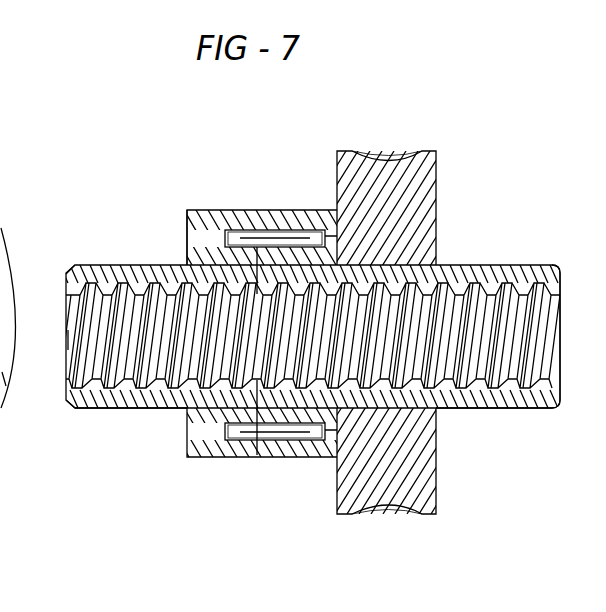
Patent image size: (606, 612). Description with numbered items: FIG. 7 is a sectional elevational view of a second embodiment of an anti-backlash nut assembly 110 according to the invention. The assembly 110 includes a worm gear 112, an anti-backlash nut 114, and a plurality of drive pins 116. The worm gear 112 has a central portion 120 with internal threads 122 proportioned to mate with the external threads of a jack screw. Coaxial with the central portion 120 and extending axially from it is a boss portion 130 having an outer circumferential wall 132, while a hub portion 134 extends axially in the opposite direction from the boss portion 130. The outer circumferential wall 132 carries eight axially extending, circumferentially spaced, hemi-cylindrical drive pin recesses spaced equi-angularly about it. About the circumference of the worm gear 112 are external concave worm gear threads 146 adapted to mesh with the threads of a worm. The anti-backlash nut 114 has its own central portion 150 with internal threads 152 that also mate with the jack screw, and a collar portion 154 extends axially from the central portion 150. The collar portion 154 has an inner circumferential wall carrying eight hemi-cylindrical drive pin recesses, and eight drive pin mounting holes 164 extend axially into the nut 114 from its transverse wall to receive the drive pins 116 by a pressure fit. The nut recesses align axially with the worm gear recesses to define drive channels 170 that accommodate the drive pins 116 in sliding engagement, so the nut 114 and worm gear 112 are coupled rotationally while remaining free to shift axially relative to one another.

The second embodiment of an anti-backlash nut assembly 110 is at (408, 583).
The worm gear 112 is at (488, 400).
The anti-backlash nut 114 is at (118, 398).
The drive pins 116 is at (305, 442).
The central portion 120 is at (545, 303).
The internal threads 122 is at (545, 370).
The boss portion 130 is at (298, 255).
The outer circumferential wall 132 is at (263, 450).
The hub portion 134 is at (490, 292).
The external concave worm gear threads 146 is at (386, 157).
The central portion 150 is at (85, 306).
The internal threads 152 is at (80, 372).
The collar portion 154 is at (228, 446).
The drive pin mounting holes 164 is at (187, 236).
The drive channels 170 is at (256, 232).